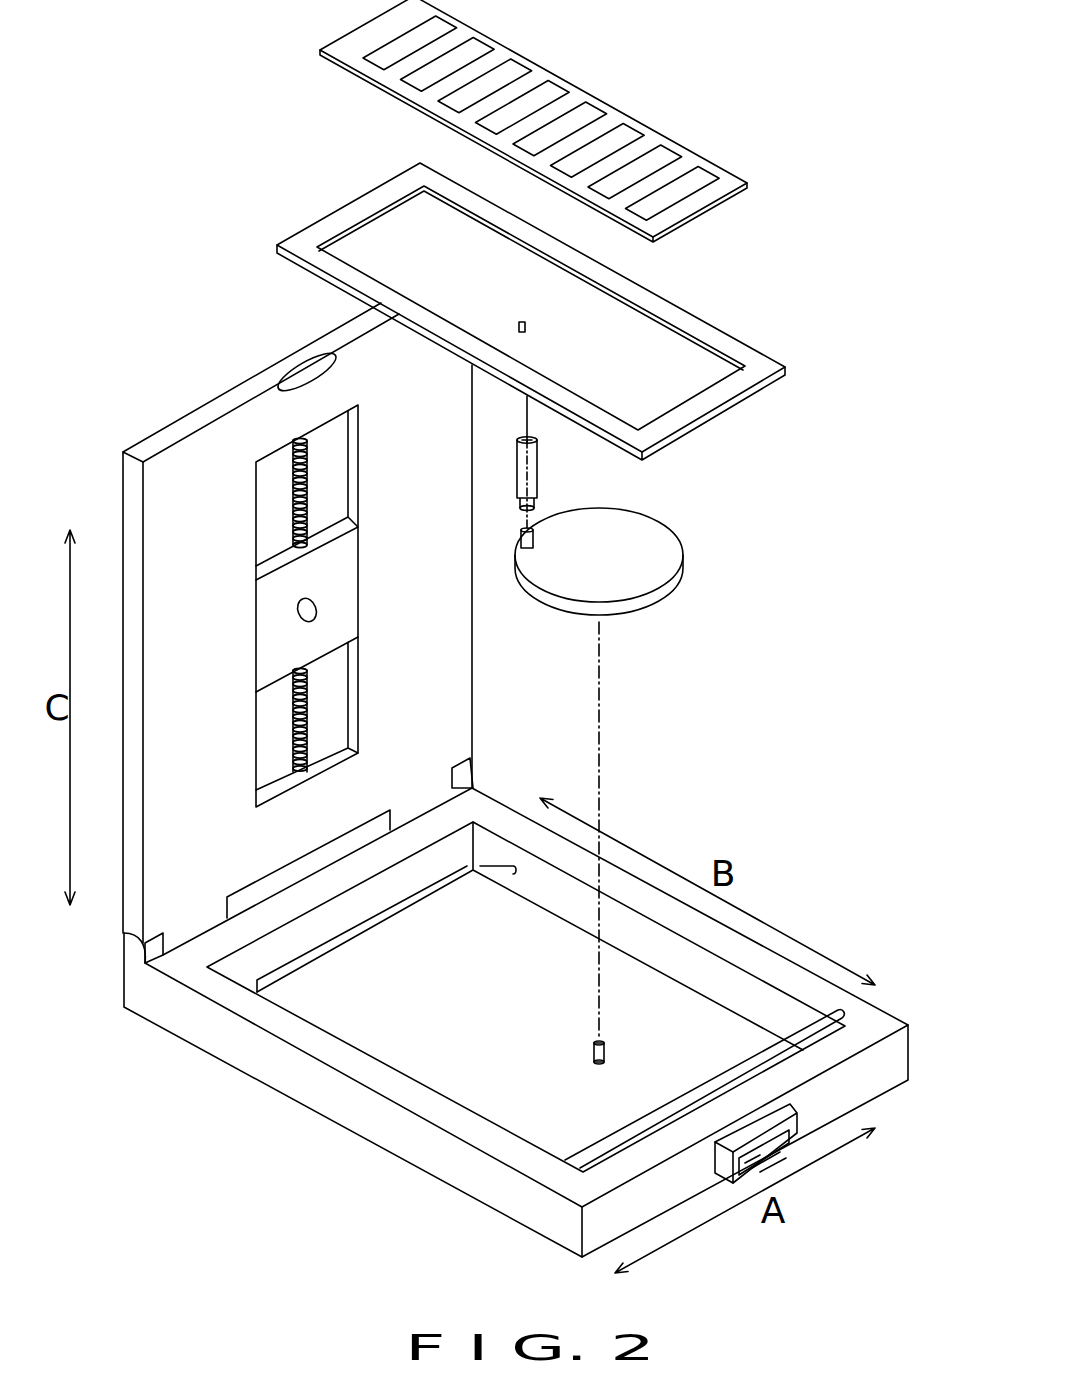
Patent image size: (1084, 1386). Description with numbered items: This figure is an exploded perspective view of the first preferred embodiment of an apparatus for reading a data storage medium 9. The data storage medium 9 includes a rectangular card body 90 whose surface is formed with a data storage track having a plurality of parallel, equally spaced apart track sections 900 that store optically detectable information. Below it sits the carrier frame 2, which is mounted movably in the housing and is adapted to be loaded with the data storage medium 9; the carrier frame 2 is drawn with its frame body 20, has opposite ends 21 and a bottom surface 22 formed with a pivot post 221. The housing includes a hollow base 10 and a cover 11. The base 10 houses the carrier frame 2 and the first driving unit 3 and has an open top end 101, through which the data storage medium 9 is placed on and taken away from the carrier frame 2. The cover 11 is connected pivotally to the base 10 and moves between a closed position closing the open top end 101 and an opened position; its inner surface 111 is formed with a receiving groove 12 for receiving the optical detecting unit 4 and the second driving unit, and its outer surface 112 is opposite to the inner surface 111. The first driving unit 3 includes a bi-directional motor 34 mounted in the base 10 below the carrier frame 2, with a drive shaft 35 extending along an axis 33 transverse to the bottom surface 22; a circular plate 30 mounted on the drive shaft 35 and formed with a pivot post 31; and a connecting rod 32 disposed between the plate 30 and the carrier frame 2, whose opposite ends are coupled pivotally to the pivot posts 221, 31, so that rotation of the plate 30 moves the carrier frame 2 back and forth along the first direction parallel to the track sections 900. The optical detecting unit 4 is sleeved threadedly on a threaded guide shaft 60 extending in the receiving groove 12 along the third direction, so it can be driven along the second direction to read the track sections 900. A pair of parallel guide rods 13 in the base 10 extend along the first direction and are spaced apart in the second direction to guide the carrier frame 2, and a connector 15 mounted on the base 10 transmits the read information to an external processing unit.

The carrier frame 2 is at (762, 327).
The first driving unit 3 is at (674, 620).
The optical detecting unit 4 is at (318, 612).
The data storage medium 9 is at (360, 103).
The base 10 is at (230, 1050).
The cover 11 is at (230, 403).
The receiving groove 12 is at (315, 690).
The guide rods 13 is at (500, 873).
The connector 15 is at (773, 1120).
The frame 20 is at (640, 410).
The opposite ends 21 is at (333, 222).
The bottom surface 22 is at (538, 403).
The pivot post 221 is at (490, 378).
The circular plate 30 is at (632, 553).
The pivot post 31 is at (530, 543).
The connecting rod 32 is at (520, 465).
The axis 33 is at (600, 802).
The bi-directional motor 34 is at (625, 1065).
The drive shaft 35 is at (597, 1038).
The threaded guide shaft 60 is at (297, 485).
The card body 90 is at (437, 113).
The track sections 900 is at (657, 193).
The open top end 101 is at (473, 1097).
The inner surface 111 is at (164, 759).
The outer surface 112 is at (122, 677).